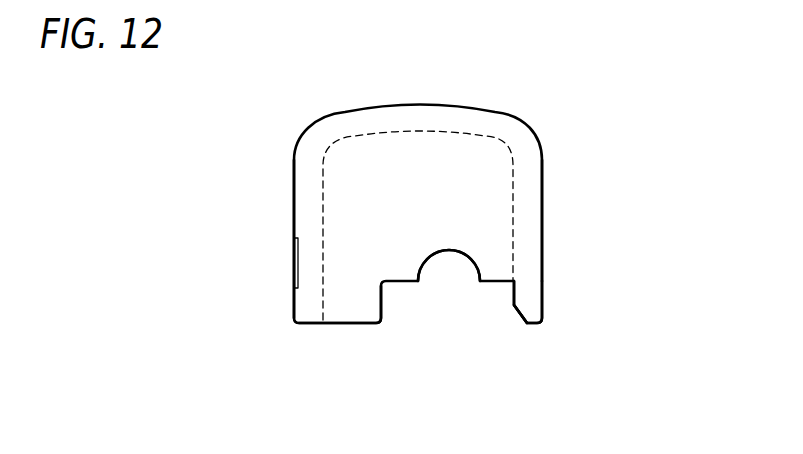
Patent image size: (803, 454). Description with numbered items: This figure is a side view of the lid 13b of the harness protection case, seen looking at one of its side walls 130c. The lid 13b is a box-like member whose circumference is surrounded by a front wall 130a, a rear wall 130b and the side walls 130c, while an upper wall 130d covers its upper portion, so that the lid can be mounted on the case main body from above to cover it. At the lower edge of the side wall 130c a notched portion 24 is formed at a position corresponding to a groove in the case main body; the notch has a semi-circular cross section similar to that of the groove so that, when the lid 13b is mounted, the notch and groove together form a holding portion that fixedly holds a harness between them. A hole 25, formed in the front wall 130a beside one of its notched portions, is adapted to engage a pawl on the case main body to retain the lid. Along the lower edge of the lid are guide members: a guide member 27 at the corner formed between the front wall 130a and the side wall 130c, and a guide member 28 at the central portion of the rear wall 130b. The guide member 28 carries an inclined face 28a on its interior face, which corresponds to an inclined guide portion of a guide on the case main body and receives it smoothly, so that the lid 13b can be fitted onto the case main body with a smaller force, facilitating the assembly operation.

The lid 13b is at (318, 122).
The upper wall 130d is at (443, 118).
The front wall 130a is at (308, 200).
The rear wall 130b is at (533, 207).
The side wall 130c is at (443, 217).
The hole 25 is at (293, 265).
The guide member 27 is at (346, 310).
The notched portion 24 is at (470, 262).
The guide member 28 is at (533, 298).
The inclined face 28a is at (526, 321).